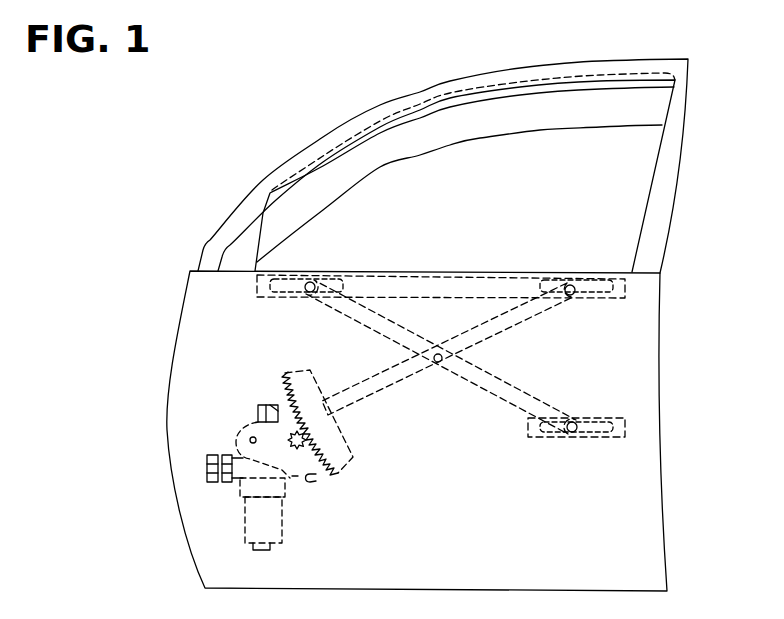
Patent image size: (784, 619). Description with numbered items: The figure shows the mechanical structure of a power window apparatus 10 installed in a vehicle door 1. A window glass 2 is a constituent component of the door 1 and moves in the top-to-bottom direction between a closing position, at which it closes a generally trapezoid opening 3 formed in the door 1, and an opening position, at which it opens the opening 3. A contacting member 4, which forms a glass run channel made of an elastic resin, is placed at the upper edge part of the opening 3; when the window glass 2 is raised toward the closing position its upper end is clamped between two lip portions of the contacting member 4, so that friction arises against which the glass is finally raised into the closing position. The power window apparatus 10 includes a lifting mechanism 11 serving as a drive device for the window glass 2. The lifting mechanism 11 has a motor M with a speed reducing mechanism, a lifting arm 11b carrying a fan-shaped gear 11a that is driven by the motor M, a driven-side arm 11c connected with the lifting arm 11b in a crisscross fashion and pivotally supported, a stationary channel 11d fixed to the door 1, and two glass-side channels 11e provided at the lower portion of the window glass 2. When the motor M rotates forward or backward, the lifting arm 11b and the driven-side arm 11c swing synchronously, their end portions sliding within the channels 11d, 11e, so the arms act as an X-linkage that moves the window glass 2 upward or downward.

The door 1 is at (207, 125).
The window glass 2 is at (443, 177).
The opening 3 is at (677, 102).
The contacting member 4 is at (502, 82).
The power window apparatus 10 is at (220, 413).
The lifting mechanism 11 is at (482, 453).
The gear 11a is at (293, 372).
The lifting arm 11b is at (363, 388).
The driven-side arm 11c is at (518, 398).
The stationary channel 11d is at (625, 424).
The glass-side channels 11e is at (625, 290).
The motor M is at (240, 517).